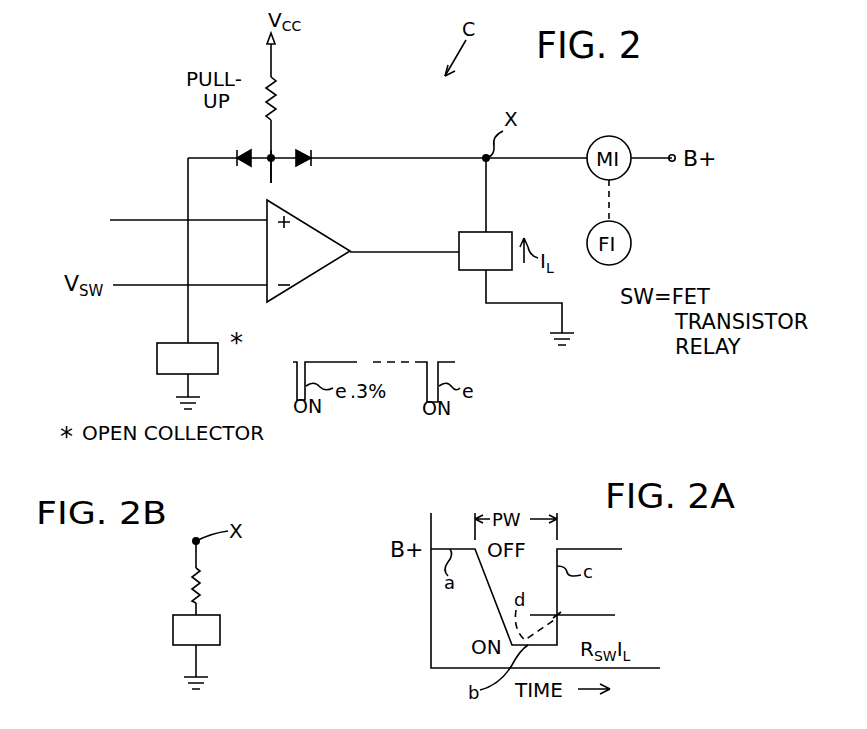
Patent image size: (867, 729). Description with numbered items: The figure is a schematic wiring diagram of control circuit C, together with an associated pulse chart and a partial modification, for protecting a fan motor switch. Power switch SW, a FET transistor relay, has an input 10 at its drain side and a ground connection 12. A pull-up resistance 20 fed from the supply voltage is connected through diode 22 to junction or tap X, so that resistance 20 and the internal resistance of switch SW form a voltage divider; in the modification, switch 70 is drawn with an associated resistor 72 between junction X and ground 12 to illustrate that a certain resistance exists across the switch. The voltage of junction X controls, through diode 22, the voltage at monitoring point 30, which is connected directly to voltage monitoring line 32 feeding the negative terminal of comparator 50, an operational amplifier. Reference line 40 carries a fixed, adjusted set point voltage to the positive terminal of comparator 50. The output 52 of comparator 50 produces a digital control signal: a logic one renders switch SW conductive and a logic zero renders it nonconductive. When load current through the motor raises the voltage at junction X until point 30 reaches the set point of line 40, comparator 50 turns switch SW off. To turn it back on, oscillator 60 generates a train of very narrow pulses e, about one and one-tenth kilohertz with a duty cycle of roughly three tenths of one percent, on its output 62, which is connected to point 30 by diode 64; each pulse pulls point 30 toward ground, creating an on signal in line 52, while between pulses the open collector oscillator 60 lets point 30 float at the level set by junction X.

In FIG. 2, the input 10 is at (488, 200).
In FIG. 2, the ground connection 12 is at (485, 292).
In FIG. 2B, the ground connection 12 is at (194, 660).
In FIG. 2, the resistance 20 is at (273, 90).
In FIG. 2, the diode 22 is at (303, 149).
In FIG. 2, the monitoring point 30 is at (268, 162).
In FIG. 2A, the monitoring point 30 is at (377, 617).
In FIG. 2, the voltage monitoring line 32 is at (271, 175).
In FIG. 2, the reference line 40 is at (149, 220).
In FIG. 2A, the reference line 40 is at (646, 614).
In FIG. 2, the comparator 50 is at (310, 272).
In FIG. 2, the output 52 is at (392, 252).
In FIG. 2, the oscillator 60 is at (218, 360).
In FIG. 2, the output 62 is at (190, 262).
In FIG. 2, the diode 64 is at (240, 153).
In FIG. 2B, the switch 70 is at (173, 632).
In FIG. 2B, the associated resistor 72 is at (191, 591).